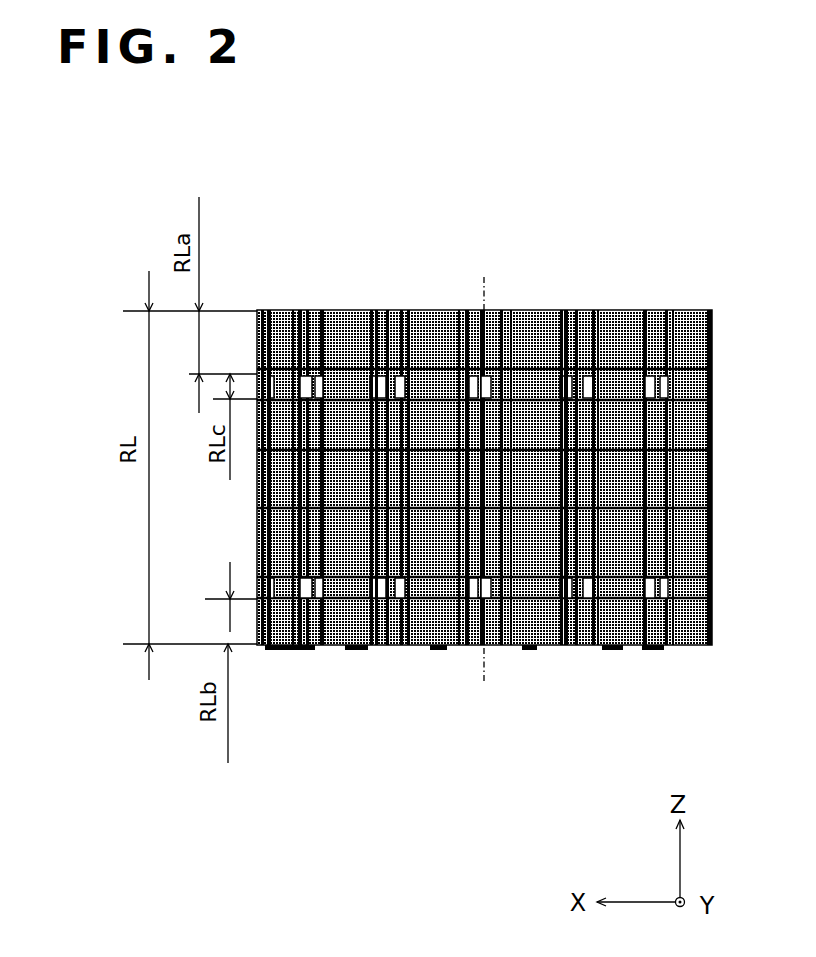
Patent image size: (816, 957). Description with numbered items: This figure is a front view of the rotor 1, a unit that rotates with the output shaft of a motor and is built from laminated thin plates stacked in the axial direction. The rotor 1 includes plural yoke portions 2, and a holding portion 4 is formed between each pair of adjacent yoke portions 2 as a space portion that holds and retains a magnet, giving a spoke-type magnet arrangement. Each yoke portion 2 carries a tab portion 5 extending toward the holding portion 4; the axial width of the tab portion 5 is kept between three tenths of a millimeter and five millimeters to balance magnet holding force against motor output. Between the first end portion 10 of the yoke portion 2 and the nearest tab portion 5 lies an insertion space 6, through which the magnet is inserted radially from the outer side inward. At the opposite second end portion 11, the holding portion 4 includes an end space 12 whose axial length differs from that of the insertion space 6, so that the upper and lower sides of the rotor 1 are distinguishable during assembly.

The rotor 1 is at (300, 695).
The yoke portion 2 is at (423, 311).
The holding portion 4 is at (580, 488).
The tab portion 5 is at (558, 370).
The insertion space 6 is at (390, 337).
The first end portion 10 is at (287, 311).
The second end portion 11 is at (587, 645).
The end space 12 is at (388, 632).